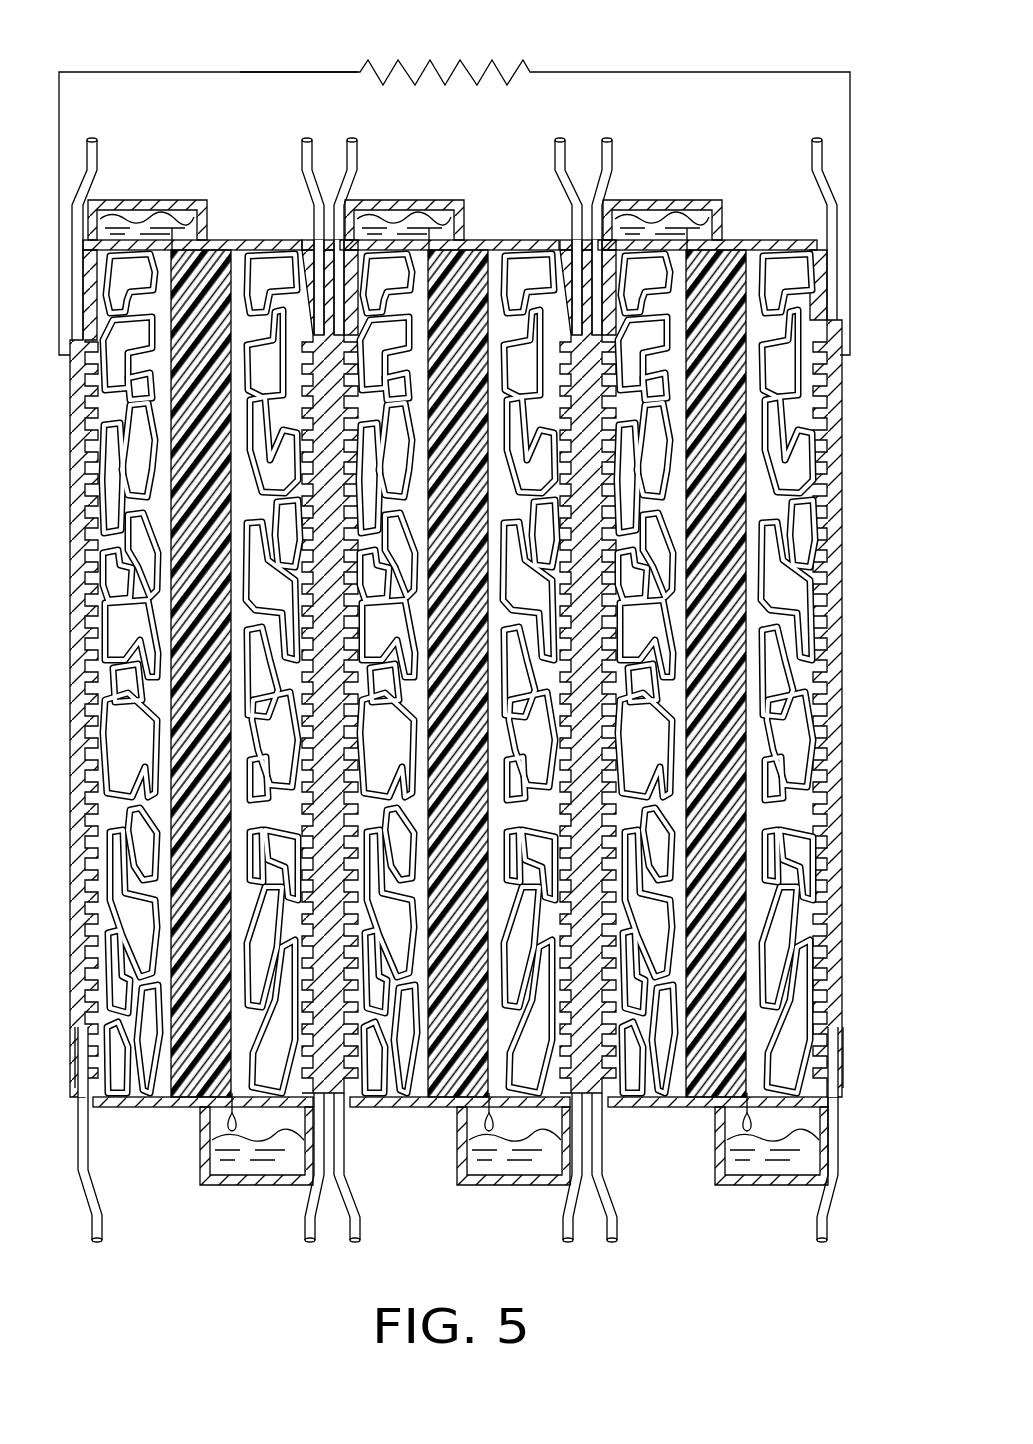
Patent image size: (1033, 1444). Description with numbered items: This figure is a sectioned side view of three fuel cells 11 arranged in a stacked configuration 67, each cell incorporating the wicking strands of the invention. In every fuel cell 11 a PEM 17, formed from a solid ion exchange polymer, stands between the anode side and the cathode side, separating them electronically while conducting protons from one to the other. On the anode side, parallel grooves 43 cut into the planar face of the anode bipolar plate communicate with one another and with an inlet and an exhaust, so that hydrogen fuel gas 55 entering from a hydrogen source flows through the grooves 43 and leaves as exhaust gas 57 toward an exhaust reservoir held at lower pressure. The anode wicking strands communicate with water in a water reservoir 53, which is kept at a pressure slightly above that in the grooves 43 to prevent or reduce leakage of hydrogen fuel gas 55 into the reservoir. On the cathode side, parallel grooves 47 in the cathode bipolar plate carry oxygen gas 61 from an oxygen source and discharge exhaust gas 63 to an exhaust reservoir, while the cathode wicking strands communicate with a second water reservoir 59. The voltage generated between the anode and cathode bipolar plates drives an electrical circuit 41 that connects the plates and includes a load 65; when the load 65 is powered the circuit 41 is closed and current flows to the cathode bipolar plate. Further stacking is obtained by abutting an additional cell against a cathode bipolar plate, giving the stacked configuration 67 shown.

The fuel cell 11 is at (133, 1170).
The PEM 17 is at (216, 548).
The electrical circuit 41 is at (140, 77).
The parallel grooves 43 is at (96, 786).
The parallel grooves 47 is at (828, 880).
The water reservoir 53 is at (207, 218).
The hydrogen fuel gas 55 is at (92, 112).
The exhaust gas 57 is at (97, 1244).
The water reservoir 59 is at (787, 1186).
The oxygen gas 61 is at (307, 112).
The exhaust gas 63 is at (310, 1244).
The load 65 is at (445, 62).
The stacked configuration 67 is at (240, 62).